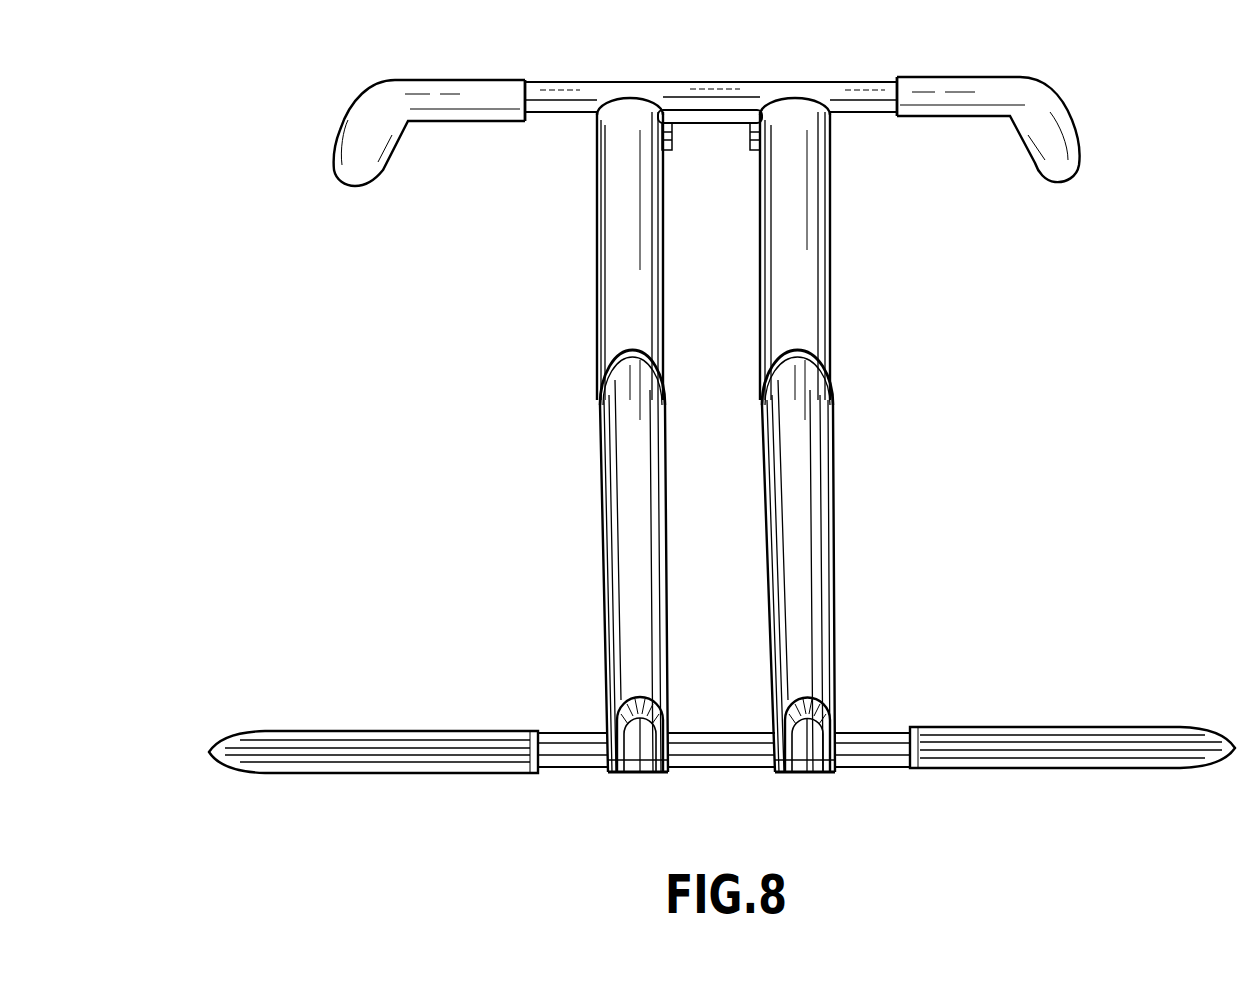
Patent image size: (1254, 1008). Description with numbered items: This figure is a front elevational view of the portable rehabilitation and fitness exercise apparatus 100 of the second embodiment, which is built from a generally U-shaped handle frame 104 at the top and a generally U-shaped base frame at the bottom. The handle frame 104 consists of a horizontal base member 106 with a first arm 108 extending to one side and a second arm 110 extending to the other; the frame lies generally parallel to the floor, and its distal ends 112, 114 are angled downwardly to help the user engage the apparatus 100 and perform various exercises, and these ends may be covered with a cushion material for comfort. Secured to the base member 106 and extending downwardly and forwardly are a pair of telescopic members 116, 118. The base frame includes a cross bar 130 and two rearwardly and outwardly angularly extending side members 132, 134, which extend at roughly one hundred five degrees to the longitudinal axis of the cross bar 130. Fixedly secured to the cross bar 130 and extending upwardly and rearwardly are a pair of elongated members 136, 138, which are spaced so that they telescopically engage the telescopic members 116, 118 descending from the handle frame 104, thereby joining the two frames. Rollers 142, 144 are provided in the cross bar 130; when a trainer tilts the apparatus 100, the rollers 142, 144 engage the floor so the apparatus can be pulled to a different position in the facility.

The portable exercise apparatus 100 is at (352, 308).
The handle frame 104 is at (1011, 76).
The base member 106 is at (724, 82).
The first arm 108 is at (482, 80).
The second arm 110 is at (965, 118).
The distal end 112 is at (389, 178).
The distal end 114 is at (1084, 147).
The telescopic member 116 is at (615, 233).
The telescopic member 118 is at (803, 306).
The cross bar 130 is at (725, 758).
The side member 132 is at (438, 730).
The side member 134 is at (1103, 727).
The elongated member 136 is at (633, 481).
The elongated member 138 is at (813, 490).
The roller 142 is at (627, 777).
The roller 144 is at (821, 777).